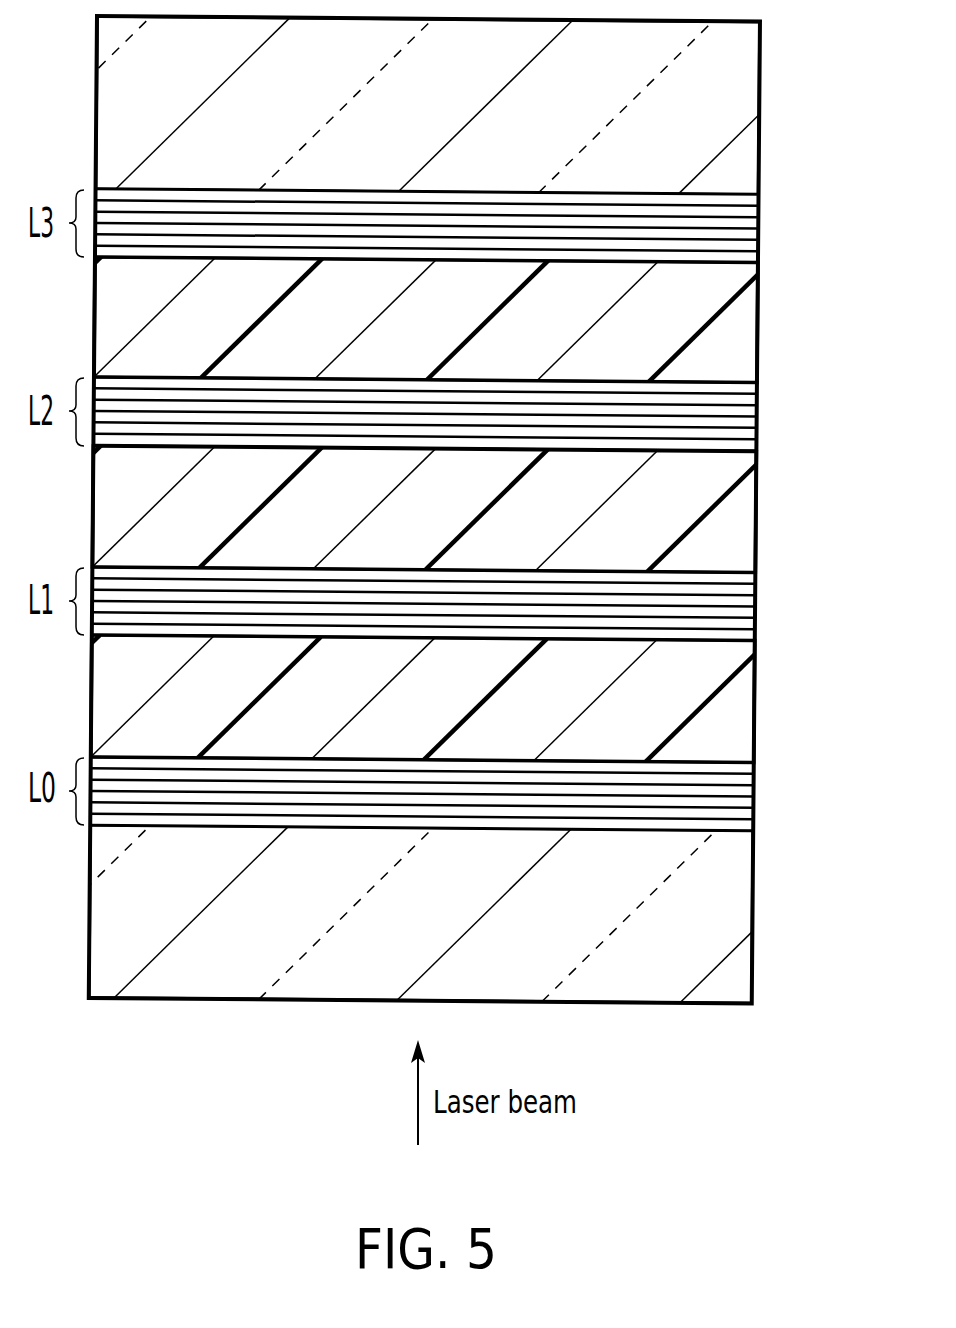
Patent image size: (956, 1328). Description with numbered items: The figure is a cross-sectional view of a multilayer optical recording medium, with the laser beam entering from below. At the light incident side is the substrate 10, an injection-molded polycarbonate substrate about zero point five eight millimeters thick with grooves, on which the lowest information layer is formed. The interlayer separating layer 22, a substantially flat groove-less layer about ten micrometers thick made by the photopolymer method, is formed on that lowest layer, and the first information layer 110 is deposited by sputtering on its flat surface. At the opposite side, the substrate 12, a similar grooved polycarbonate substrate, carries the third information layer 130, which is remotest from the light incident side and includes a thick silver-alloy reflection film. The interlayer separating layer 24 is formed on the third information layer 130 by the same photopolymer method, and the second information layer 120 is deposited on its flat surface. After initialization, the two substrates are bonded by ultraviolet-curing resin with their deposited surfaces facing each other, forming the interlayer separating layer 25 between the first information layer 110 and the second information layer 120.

The substrate 10 is at (752, 900).
The substrate 12 is at (759, 125).
The interlayer separating layer 22 is at (754, 705).
The interlayer separating layer 24 is at (758, 323).
The interlayer separating layer 25 is at (756, 498).
The L1 layer 110 is at (755, 597).
The L2 layer 120 is at (757, 413).
The L3 layer 130 is at (759, 230).